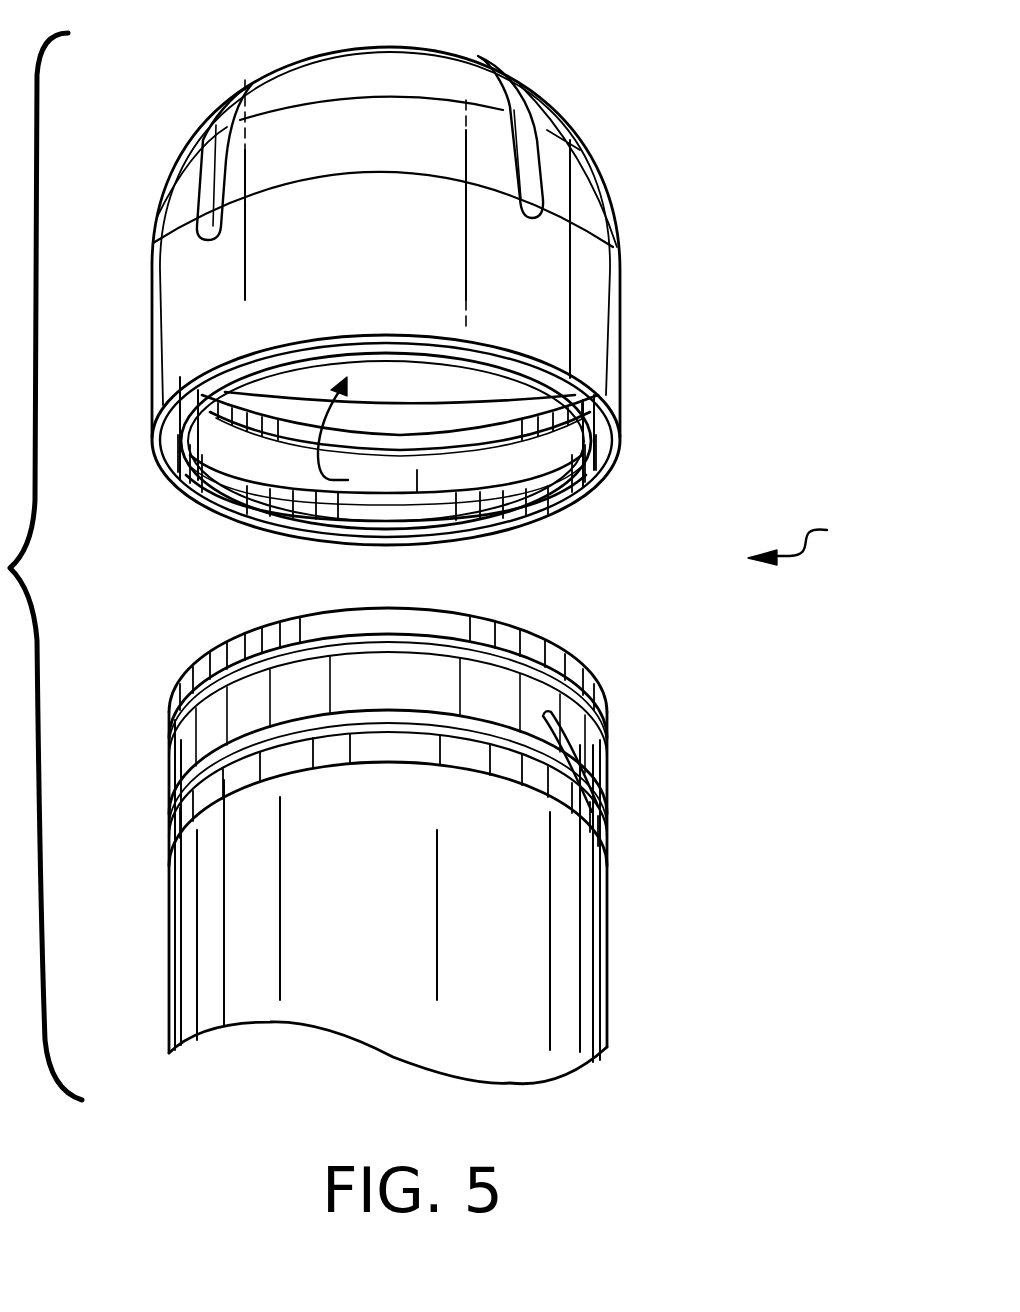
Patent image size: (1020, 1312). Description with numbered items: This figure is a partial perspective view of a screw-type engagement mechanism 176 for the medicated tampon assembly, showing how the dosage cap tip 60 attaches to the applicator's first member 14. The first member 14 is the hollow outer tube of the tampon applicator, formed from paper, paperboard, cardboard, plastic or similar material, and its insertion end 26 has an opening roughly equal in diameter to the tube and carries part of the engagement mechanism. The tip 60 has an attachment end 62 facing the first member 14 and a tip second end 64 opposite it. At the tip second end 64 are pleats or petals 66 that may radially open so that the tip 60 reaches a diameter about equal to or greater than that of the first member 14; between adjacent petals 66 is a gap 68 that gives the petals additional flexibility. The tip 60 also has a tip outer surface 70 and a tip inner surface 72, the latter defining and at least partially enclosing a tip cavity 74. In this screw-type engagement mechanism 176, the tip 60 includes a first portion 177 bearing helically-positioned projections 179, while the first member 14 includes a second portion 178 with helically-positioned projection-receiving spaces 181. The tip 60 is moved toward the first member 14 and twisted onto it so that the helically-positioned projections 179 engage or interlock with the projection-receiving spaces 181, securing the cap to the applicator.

The first member 14 is at (611, 964).
The insertion end 26 is at (170, 840).
The tip 60 is at (623, 293).
The attachment end 62 is at (623, 403).
The tip second end 64 is at (557, 107).
The petals 66 is at (433, 62).
The gap 68 is at (240, 96).
The tip outer surface 70 is at (419, 296).
The tip inner surface 72 is at (310, 377).
The tip cavity 74 is at (353, 437).
The screw-type engagement mechanism 176 is at (821, 540).
The first portion 177 is at (607, 478).
The second portion 178 is at (598, 722).
The helically-positioned projections 179 is at (518, 512).
The helically-positioned projection-receiving spaces 181 is at (590, 664).